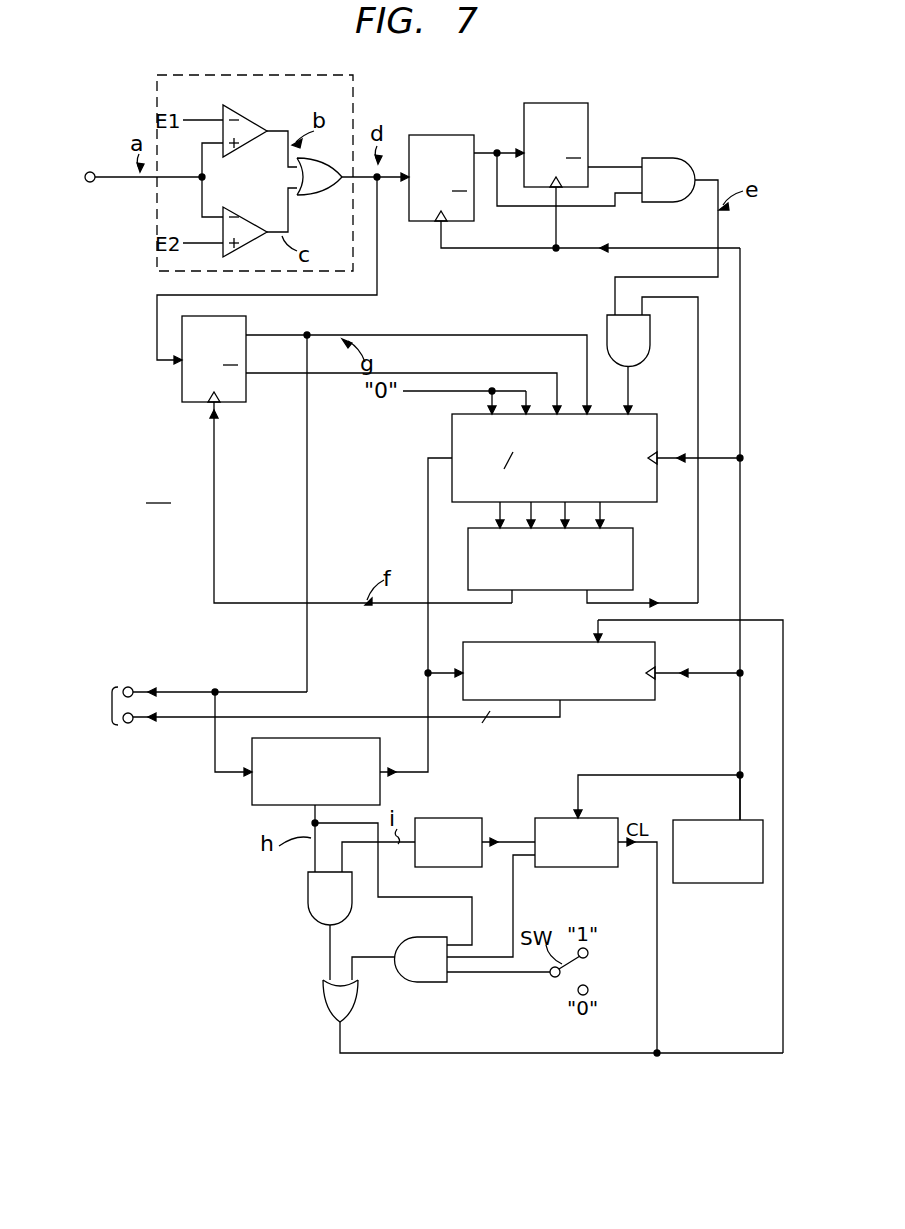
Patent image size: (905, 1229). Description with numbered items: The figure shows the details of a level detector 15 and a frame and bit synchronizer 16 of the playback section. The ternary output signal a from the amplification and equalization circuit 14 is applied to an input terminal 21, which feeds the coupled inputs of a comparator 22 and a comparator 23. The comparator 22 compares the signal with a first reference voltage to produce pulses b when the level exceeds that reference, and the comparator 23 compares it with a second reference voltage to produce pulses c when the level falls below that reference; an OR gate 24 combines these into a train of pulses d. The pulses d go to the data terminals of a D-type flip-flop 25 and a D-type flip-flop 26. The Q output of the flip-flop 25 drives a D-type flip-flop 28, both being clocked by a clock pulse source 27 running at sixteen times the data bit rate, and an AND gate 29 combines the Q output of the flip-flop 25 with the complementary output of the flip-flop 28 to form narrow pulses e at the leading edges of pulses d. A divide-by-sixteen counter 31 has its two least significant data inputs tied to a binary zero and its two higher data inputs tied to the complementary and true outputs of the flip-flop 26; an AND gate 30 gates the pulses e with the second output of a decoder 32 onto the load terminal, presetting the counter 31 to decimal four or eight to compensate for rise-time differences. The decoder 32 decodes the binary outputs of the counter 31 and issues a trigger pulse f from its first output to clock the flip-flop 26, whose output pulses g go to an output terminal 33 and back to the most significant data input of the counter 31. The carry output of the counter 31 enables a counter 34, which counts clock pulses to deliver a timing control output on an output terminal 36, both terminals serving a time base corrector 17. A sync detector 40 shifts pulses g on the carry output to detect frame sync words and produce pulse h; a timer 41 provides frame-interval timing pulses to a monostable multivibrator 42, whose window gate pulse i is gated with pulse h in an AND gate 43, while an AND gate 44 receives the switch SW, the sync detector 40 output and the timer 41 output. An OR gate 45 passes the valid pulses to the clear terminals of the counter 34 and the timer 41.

The amplification and equalization circuit 14 is at (75, 158).
The level detector 15 is at (353, 91).
The frame and bit synchronizer 16 is at (160, 490).
The time base corrector 17 is at (81, 700).
The input terminal 21 is at (136, 190).
The comparator 22 is at (238, 115).
The comparator 23 is at (238, 217).
The OR gate 24 is at (322, 165).
The D-type flip-flop 25 is at (441, 135).
The D-type flip-flop 26 is at (246, 316).
The clock pulse source 27 is at (710, 820).
The D-type flip-flop 28 is at (588, 103).
The AND gate 29 is at (665, 158).
The AND gate 30 is at (650, 337).
The divide-by-16 counter 31 is at (657, 414).
The decoder 32 is at (634, 549).
The output terminal 33 is at (212, 680).
The counter 34 is at (550, 642).
The output terminal 36 is at (131, 732).
The sync detector 40 is at (381, 749).
The timer 41 is at (543, 818).
The monostable multivibrator 42 is at (448, 818).
The AND gate 43 is at (308, 919).
The AND gate 44 is at (430, 938).
The OR gate 45 is at (358, 997).